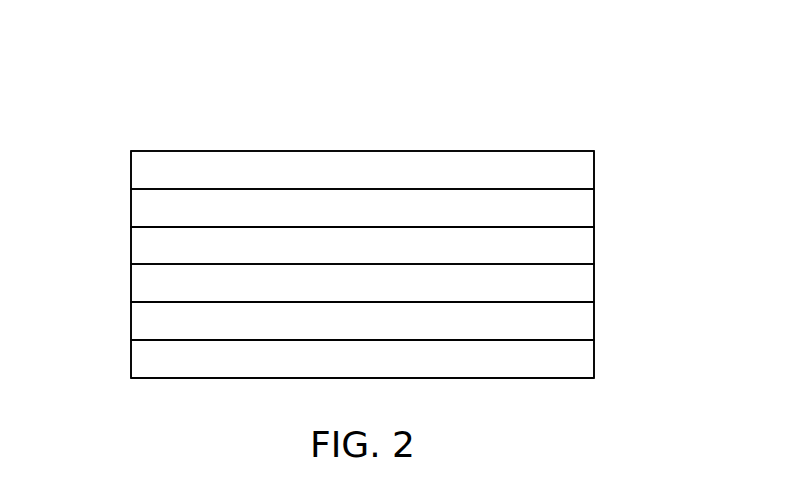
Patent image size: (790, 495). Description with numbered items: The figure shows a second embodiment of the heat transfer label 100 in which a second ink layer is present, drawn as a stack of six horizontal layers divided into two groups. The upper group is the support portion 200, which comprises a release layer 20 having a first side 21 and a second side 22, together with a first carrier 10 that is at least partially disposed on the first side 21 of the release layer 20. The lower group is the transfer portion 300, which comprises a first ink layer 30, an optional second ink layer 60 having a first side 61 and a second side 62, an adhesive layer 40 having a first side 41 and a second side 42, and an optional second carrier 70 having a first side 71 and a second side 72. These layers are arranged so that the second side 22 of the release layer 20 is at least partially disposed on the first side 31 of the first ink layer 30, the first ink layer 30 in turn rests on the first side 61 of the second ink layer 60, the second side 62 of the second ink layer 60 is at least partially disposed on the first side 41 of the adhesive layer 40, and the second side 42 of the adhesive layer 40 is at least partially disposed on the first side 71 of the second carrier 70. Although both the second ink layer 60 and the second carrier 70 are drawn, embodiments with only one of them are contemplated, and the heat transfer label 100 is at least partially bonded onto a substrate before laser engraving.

The heat transfer label 100 is at (606, 109).
The support portion 200 is at (131, 151).
The transfer portion 300 is at (131, 227).
The first carrier 10 is at (593, 170).
The release layer 20 is at (593, 208).
The first side of release layer 21 is at (393, 185).
The second side of release layer 22 is at (562, 222).
The first ink layer 30 is at (593, 248).
The first side of first ink layer 31 is at (432, 227).
The second ink layer 60 is at (593, 288).
The first side of second ink layer 61 is at (206, 262).
The second side of second ink layer 62 is at (292, 301).
The adhesive layer 40 is at (593, 328).
The first side of adhesive layer 41 is at (402, 304).
The second side of adhesive layer 42 is at (366, 340).
The second carrier 70 is at (593, 368).
The first side of second carrier 71 is at (471, 340).
The second side of second carrier 72 is at (514, 380).